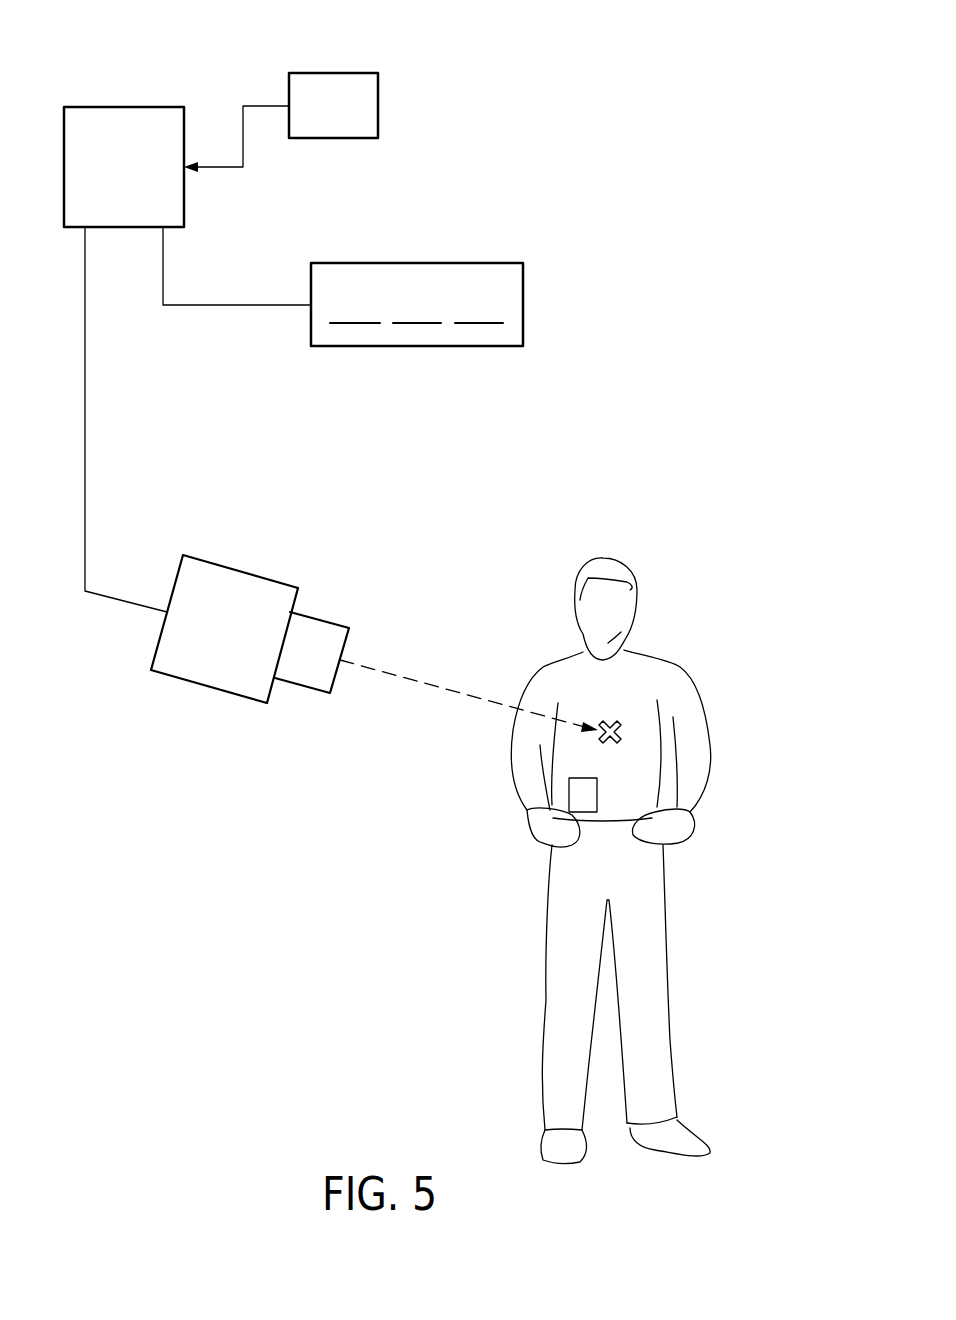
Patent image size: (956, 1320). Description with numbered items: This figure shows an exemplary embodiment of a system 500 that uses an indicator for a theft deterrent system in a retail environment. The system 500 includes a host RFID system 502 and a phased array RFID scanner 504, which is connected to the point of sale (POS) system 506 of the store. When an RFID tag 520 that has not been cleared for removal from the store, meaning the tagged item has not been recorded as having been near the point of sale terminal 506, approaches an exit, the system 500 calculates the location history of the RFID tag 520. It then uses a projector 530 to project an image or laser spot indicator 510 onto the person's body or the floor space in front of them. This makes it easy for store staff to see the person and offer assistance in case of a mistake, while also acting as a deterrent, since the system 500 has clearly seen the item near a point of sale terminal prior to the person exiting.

The system 500 is at (596, 160).
The host RFID system 502 is at (127, 107).
The phased array RFID scanner 504 is at (523, 293).
The point of sale (POS) system 506 is at (333, 73).
The indicator 510 is at (622, 733).
The RFID tag 520 is at (569, 795).
The projector 530 is at (213, 692).